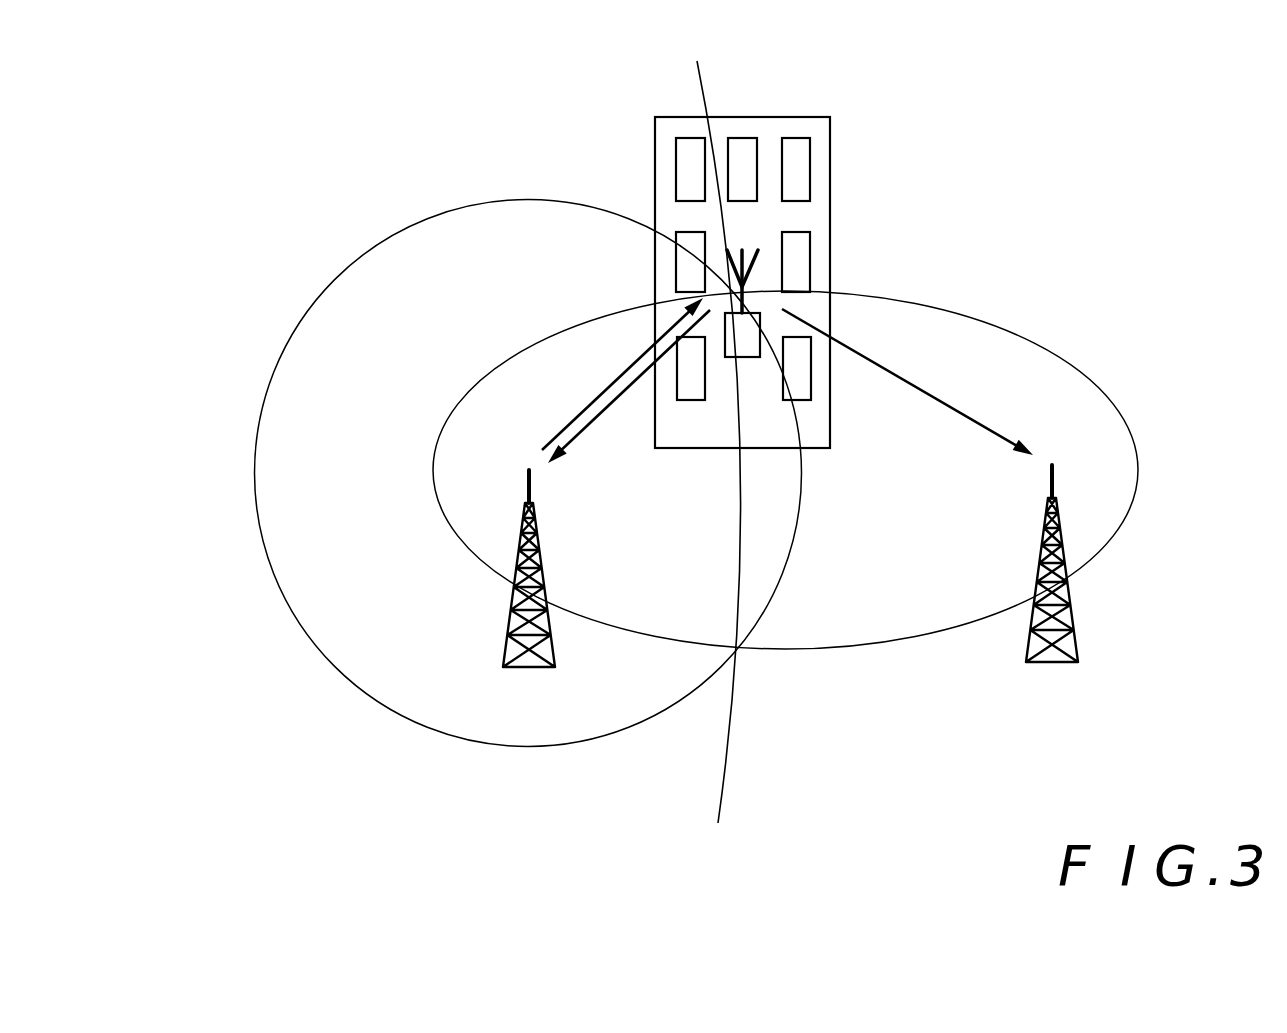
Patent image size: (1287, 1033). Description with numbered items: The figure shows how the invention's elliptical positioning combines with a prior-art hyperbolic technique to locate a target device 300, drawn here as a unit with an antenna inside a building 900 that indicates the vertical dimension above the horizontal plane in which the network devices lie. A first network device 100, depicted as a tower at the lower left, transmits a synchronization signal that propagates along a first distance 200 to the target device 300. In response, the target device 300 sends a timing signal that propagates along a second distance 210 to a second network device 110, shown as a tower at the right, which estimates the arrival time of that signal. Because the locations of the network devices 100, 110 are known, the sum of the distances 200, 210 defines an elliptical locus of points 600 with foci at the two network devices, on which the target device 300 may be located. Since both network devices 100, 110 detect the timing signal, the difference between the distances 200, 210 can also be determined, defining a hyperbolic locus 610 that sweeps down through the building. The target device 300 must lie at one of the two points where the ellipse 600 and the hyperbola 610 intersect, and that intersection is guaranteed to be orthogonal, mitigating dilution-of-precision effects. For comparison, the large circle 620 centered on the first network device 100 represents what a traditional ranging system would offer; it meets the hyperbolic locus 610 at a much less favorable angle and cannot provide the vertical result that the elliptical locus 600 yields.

The first network device 100 is at (508, 633).
The second network device 110 is at (1075, 618).
The first distance 200 is at (575, 443).
The second distance 210 is at (897, 372).
The target device 300 is at (757, 358).
The elliptical locus of points 600 is at (1052, 349).
The hyperbolic locus 610 is at (722, 803).
The circle 620 is at (254, 466).
The building 900 is at (822, 118).